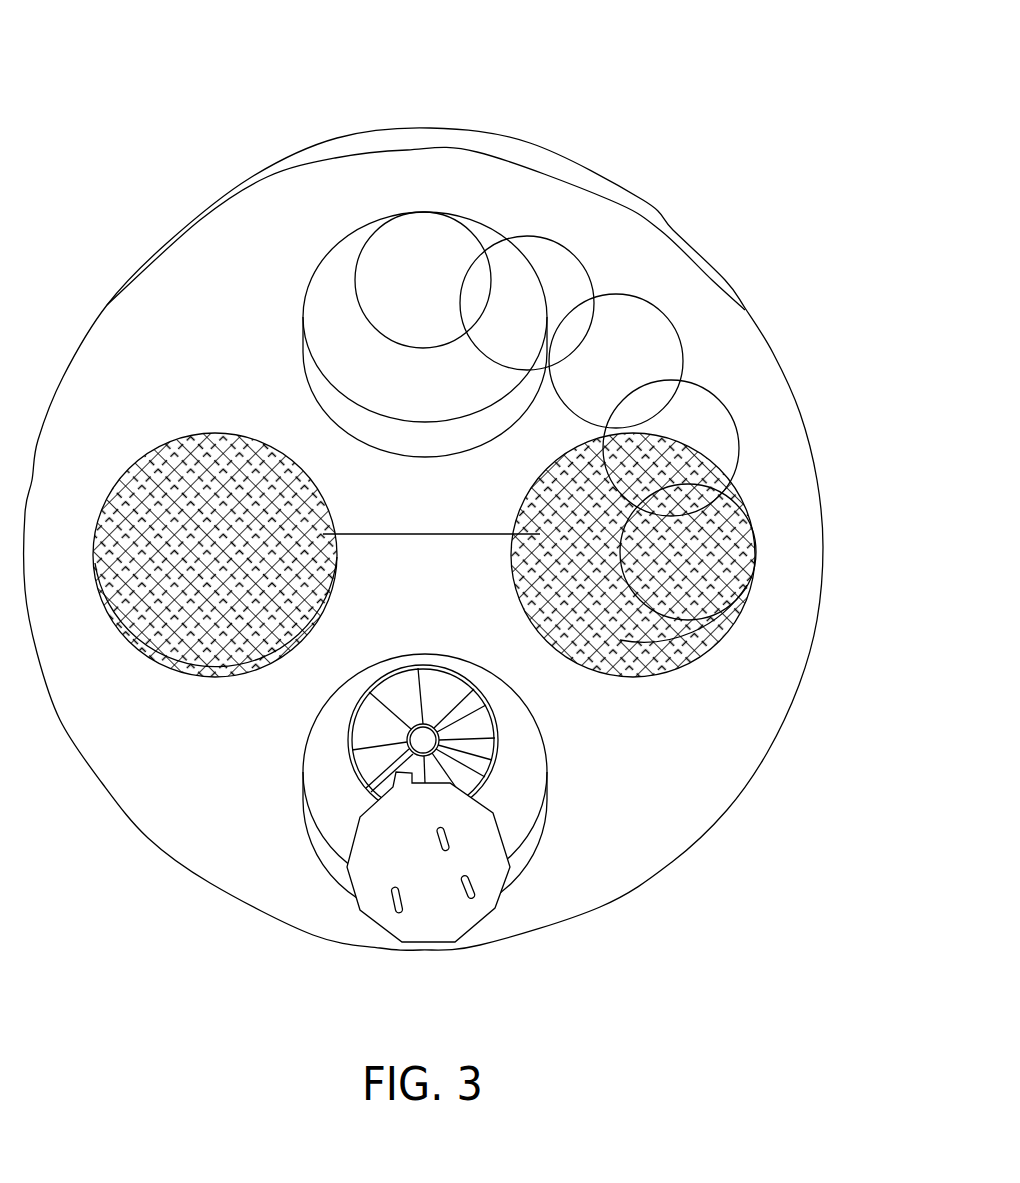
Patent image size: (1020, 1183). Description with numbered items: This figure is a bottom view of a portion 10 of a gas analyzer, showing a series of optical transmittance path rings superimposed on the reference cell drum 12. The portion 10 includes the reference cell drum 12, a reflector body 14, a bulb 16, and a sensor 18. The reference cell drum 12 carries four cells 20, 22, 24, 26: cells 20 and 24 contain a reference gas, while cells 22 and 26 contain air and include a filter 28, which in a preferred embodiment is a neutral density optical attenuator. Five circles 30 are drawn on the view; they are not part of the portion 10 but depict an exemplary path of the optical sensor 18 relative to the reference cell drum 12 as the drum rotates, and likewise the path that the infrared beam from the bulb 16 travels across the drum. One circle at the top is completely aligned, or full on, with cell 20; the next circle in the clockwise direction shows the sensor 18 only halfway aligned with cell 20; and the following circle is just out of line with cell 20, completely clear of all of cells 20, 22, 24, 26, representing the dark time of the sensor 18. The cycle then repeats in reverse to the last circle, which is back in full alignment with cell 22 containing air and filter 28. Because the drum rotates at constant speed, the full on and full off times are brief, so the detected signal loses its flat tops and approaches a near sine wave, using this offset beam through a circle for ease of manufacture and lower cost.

The portion of a gas analyzer 10 is at (775, 102).
The reference cell drum 12 is at (527, 157).
The reflector body 14 is at (375, 673).
The bulb 16 is at (480, 727).
The sensor 18 is at (372, 905).
The cell 20 is at (303, 330).
The cell 22 is at (750, 597).
The cell 24 is at (303, 752).
The cell 26 is at (335, 513).
The filter 28 is at (424, 534).
The circles 30 is at (593, 295).